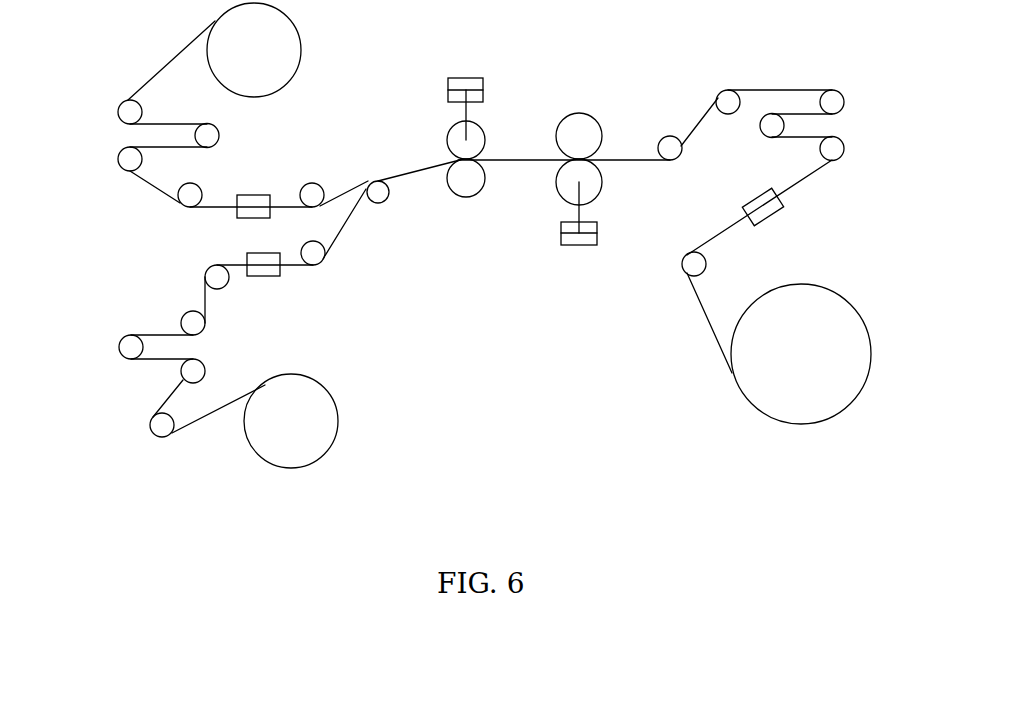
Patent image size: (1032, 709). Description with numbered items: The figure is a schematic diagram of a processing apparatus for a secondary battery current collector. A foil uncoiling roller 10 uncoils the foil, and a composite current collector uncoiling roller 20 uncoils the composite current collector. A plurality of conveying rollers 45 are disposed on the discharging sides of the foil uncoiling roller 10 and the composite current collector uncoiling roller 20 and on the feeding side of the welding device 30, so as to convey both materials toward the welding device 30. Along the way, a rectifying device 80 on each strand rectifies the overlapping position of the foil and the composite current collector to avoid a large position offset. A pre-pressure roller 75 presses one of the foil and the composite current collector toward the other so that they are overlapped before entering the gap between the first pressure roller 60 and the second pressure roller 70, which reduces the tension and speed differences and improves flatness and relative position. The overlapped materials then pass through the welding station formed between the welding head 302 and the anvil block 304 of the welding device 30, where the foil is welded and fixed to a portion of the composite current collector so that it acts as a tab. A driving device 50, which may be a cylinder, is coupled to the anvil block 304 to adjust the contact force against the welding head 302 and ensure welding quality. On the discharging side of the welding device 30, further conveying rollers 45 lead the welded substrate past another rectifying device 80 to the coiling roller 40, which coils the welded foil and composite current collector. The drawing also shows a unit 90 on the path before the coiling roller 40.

The foil uncoiling roller 10 is at (277, 53).
The composite current collector uncoiling roller 20 is at (303, 393).
The welding device 30 is at (604, 132).
The welding head 302 is at (583, 128).
The anvil block 304 is at (588, 192).
The coiling roller 40 is at (827, 307).
The conveying roller 45 is at (130, 110).
The driving device 50 is at (587, 240).
The first pressure roller 60 is at (458, 132).
The second pressure roller 70 is at (463, 190).
The pre-pressure roller 75 is at (377, 192).
The rectifying device 80 is at (243, 202).
The processing station 90 is at (762, 215).